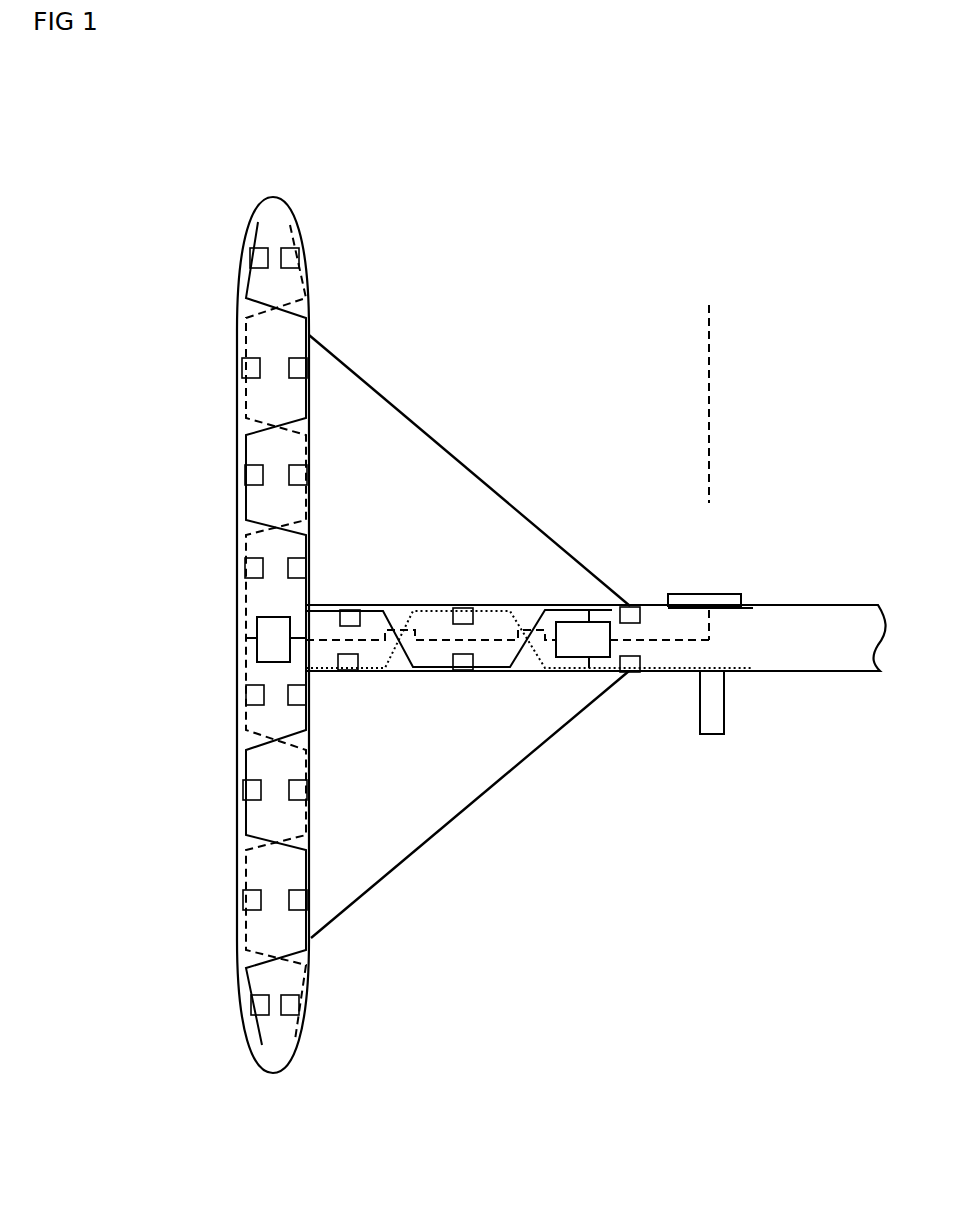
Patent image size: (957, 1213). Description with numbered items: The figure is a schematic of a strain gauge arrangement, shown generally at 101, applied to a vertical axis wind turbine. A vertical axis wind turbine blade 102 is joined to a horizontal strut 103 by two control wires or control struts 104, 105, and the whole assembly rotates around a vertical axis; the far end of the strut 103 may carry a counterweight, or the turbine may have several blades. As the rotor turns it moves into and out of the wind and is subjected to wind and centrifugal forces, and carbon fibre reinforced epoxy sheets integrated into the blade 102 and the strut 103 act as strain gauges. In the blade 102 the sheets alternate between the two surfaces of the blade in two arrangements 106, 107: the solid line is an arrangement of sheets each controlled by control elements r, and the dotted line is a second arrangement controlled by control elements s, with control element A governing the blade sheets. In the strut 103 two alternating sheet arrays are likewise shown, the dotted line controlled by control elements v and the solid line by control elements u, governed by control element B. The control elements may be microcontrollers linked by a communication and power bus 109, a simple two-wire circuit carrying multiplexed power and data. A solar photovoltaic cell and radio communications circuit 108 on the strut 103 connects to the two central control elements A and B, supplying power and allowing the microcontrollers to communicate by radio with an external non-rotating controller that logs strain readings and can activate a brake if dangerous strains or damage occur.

The rotor blade assembly 101 is at (505, 580).
The vertical axis wind turbine blade 102 is at (237, 305).
The horizontal strut 103 is at (815, 672).
The control wire or control strut 104 is at (448, 451).
The control wire or control strut 105 is at (505, 781).
The first winding 106 is at (237, 446).
The second winding 107 is at (243, 869).
The solar photovoltaic cell and radio communications circuit 108 is at (708, 593).
The communication and power bus 109 is at (368, 641).